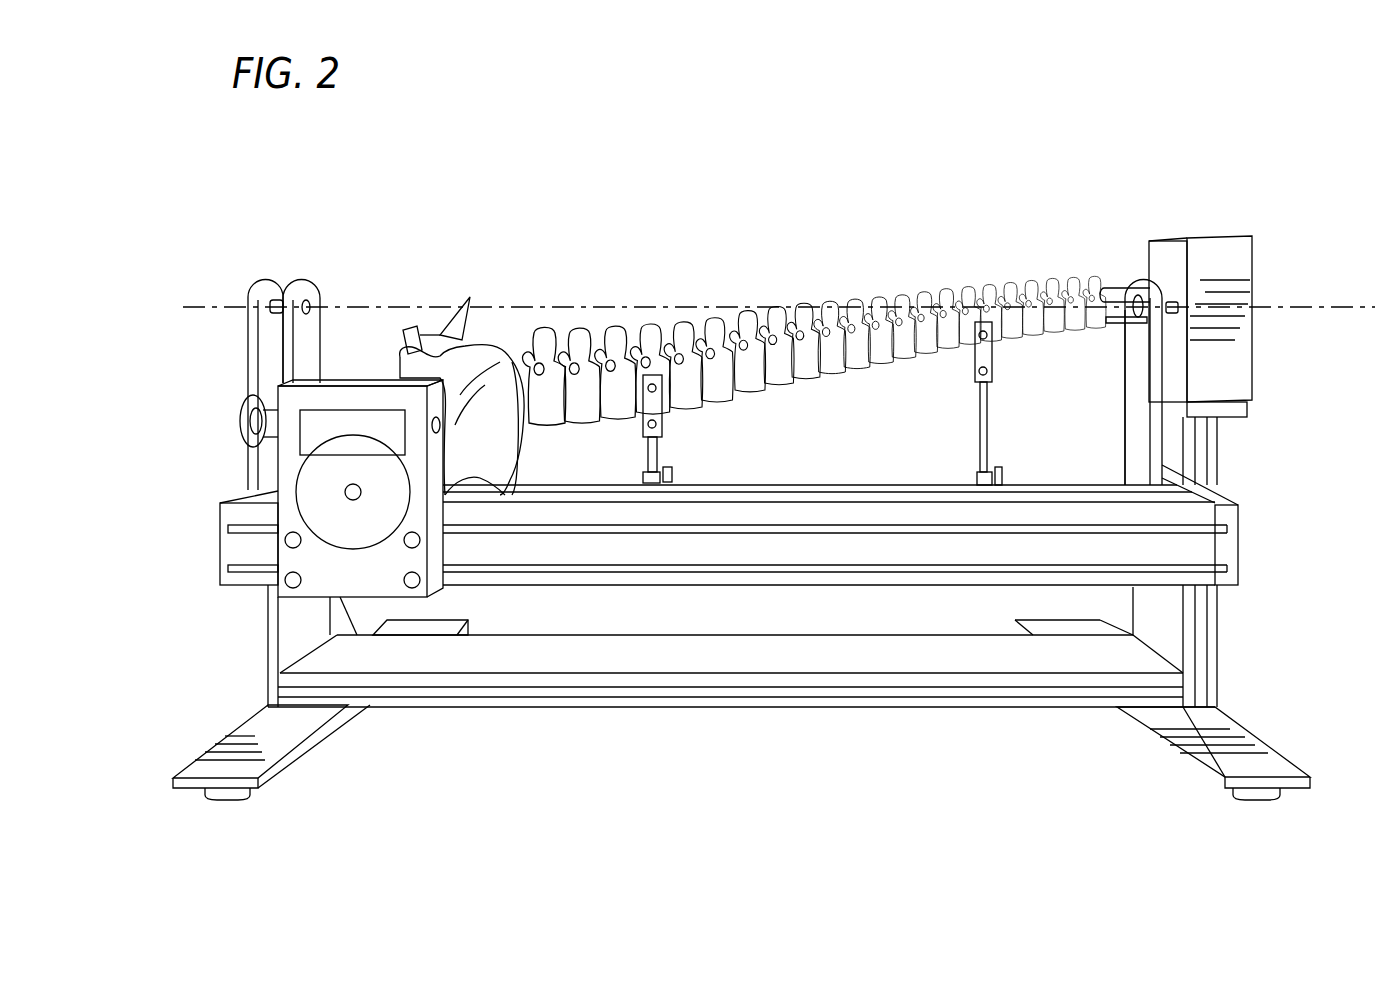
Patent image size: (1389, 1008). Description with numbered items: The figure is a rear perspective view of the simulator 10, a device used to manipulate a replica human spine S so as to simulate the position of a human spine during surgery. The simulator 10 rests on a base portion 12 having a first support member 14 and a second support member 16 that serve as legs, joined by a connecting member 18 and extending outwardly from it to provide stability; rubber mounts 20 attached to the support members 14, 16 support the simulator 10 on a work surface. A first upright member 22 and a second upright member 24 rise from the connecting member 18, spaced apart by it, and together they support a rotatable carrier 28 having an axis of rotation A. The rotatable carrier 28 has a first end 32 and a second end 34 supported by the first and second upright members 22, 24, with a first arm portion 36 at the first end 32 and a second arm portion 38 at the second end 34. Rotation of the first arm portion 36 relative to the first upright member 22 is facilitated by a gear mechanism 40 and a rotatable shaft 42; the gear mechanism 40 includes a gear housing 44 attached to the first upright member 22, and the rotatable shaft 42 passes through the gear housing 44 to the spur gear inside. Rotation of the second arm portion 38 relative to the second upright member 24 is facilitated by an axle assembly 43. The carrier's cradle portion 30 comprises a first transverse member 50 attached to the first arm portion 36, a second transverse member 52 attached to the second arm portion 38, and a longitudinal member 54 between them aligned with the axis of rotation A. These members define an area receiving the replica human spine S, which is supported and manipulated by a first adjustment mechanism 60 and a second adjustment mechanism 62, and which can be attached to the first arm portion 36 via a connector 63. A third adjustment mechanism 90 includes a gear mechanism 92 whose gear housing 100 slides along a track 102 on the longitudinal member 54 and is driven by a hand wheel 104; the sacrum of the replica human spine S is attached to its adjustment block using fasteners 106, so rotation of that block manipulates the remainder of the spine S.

The simulator 10 is at (226, 297).
The base portion 12 is at (764, 731).
The first support member 14 is at (1262, 763).
The second support member 16 is at (228, 762).
The connecting member 18 is at (710, 707).
The rubber mounts 20 is at (228, 800).
The first upright member 22 is at (1203, 645).
The second upright member 24 is at (292, 618).
The rotatable carrier 28 is at (751, 545).
The cradle portion 30 is at (956, 591).
The first end 32 is at (1121, 358).
The second end 34 is at (282, 358).
The first arm portion 36 is at (1140, 392).
The second arm portion 38 is at (305, 332).
The gear mechanism 40 is at (1260, 324).
The rotatable shaft 42 is at (1112, 288).
The axle assembly 43 is at (307, 303).
The gear housing 44 is at (1232, 238).
The first transverse member 50 is at (1195, 472).
The second transverse member 52 is at (280, 485).
The longitudinal member 54 is at (657, 550).
The first adjustment mechanism 60 is at (952, 407).
The second adjustment mechanism 62 is at (702, 440).
The connector 63 is at (1164, 312).
The third adjustment mechanism 90 is at (334, 600).
The gear mechanism 92 is at (369, 382).
The gear housing 100 is at (390, 565).
The track 102 is at (836, 572).
The hand wheel 104 is at (262, 420).
The fasteners 106 is at (482, 300).
The replica human spine S is at (753, 346).
The axis of rotation A is at (1340, 304).